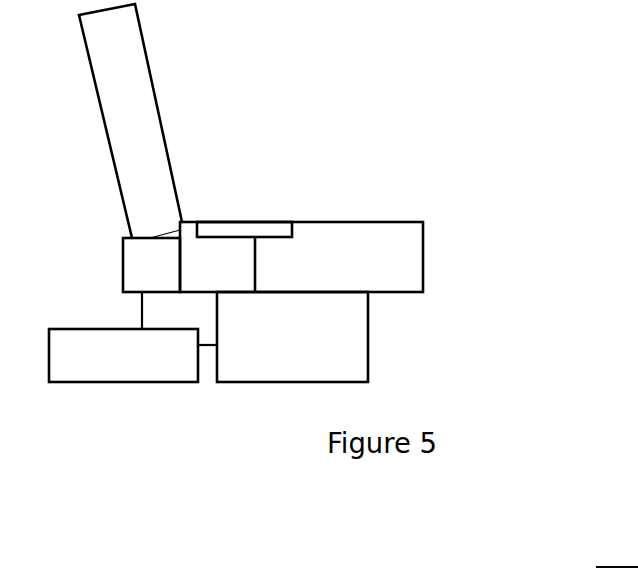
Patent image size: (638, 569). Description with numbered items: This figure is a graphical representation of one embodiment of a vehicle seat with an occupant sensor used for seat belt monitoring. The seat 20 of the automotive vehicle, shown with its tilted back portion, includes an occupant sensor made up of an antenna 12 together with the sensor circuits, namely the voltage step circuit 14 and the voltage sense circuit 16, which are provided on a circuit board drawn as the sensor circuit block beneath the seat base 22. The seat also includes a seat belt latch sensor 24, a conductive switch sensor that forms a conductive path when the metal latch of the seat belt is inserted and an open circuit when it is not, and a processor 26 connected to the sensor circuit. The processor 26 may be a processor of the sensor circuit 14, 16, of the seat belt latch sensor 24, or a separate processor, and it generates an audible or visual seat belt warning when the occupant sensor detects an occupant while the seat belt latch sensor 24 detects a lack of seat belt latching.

The antenna 12 is at (256, 218).
The voltage step circuit 14 is at (377, 337).
The voltage sense circuit 16 is at (370, 327).
The seat 20 is at (162, 59).
The housing body 22 is at (333, 218).
The seat belt latch sensor 24 is at (121, 267).
The processor 26 is at (123, 384).